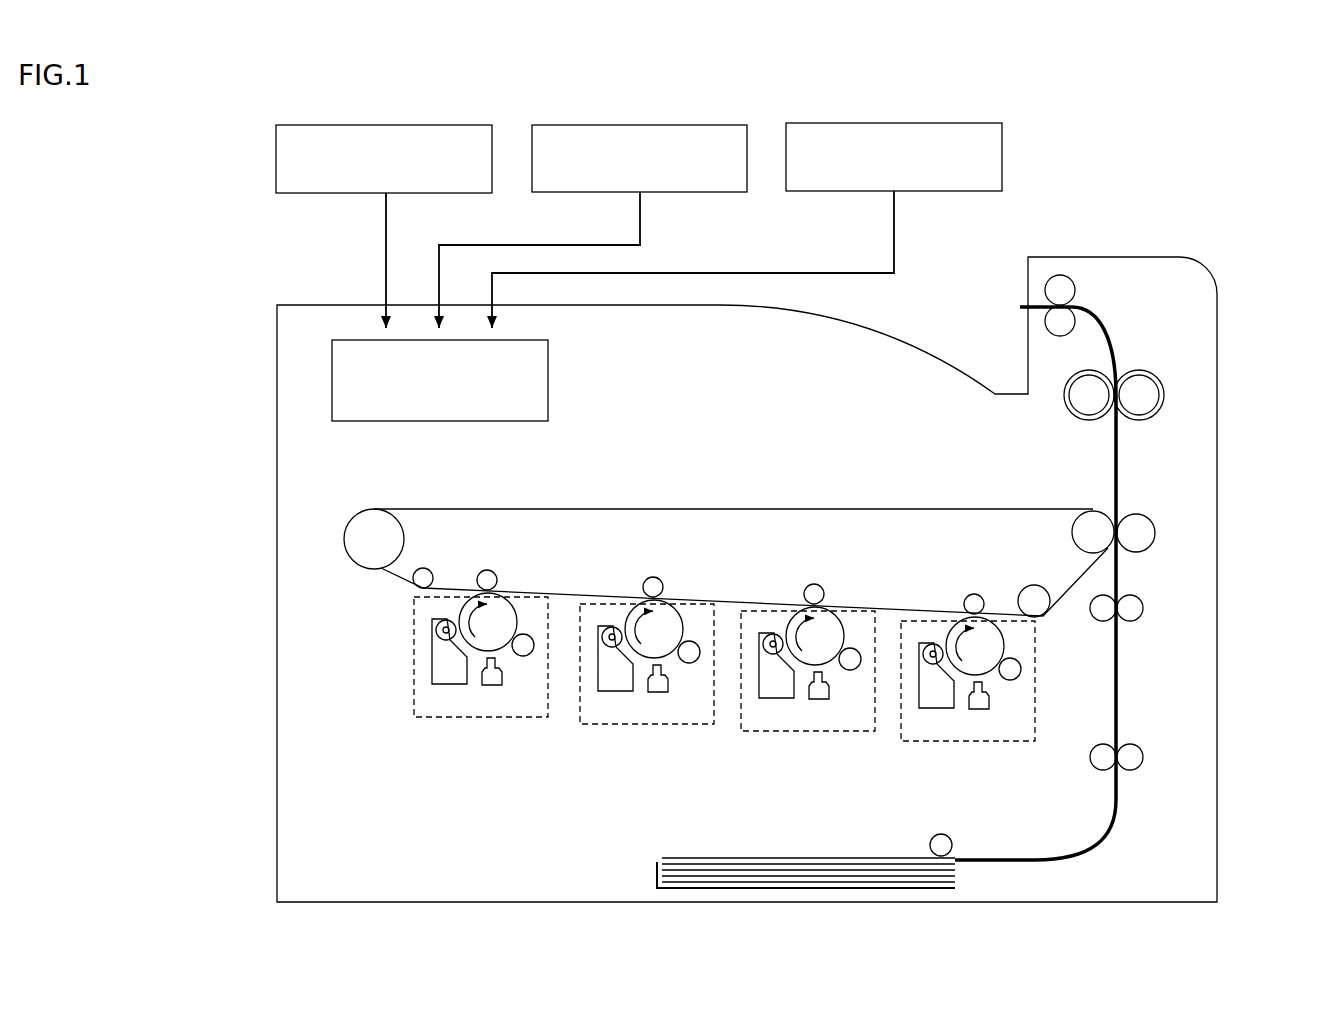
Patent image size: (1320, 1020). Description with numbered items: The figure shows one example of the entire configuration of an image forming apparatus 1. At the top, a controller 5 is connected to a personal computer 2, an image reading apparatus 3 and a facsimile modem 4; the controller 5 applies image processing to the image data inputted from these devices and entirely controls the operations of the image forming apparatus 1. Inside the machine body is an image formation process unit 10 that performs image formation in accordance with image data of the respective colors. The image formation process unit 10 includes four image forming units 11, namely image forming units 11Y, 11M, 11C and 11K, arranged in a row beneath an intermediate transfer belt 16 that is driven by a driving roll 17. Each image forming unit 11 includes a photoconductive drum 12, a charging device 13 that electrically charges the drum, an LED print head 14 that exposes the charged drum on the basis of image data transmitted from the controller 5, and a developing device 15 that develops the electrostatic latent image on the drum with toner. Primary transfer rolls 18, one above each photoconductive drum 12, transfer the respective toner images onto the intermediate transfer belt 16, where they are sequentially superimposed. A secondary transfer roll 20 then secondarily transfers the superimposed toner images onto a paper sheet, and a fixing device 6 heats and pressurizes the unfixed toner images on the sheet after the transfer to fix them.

The image forming apparatus 1 is at (190, 268).
The personal computer 2 is at (357, 124).
The image reading apparatus 3 is at (612, 124).
The facsimile modem 4 is at (853, 122).
The controller 5 is at (330, 376).
The fixing device 6 is at (1182, 385).
The image formation process unit 10 is at (750, 614).
The image forming unit 11 is at (691, 659).
The image forming unit 11Y is at (407, 717).
The image forming unit 11M is at (575, 725).
The image forming unit 11C is at (740, 735).
The image forming unit 11K is at (945, 659).
The photoconductive drum 12 is at (948, 632).
The charging device 13 is at (1016, 676).
The LED print head 14 is at (977, 712).
The developing device 15 is at (937, 710).
The intermediate transfer belt 16 is at (795, 508).
The driving roll 17 is at (380, 515).
The primary transfer roll 18 is at (975, 593).
The secondary transfer roll 20 is at (1175, 520).